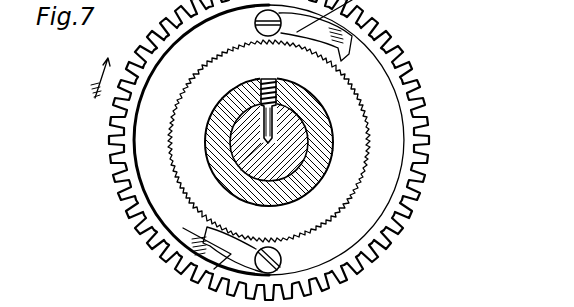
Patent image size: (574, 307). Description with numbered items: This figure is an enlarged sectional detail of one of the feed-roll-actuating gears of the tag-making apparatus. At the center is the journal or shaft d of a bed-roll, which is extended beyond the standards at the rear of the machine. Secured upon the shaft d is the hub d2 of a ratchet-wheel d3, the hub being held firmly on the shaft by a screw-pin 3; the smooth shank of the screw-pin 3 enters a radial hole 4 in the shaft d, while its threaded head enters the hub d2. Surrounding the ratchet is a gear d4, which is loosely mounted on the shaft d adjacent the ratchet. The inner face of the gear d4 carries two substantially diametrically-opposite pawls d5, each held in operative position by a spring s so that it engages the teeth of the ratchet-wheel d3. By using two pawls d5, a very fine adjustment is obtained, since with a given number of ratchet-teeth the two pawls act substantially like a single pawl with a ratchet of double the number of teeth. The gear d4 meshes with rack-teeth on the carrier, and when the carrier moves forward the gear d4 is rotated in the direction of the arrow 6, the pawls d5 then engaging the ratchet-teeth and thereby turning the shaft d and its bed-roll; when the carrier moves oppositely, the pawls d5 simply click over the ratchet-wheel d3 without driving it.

The gear d4 is at (397, 238).
The pawls d5 is at (193, 272).
The ratchet-wheel d3 is at (202, 73).
The hub d2 is at (212, 124).
The shaft d is at (295, 167).
The screw-pin 3 is at (275, 83).
The radial hole 4 is at (239, 165).
The springs s is at (353, 34).
The arrow 6 is at (100, 68).